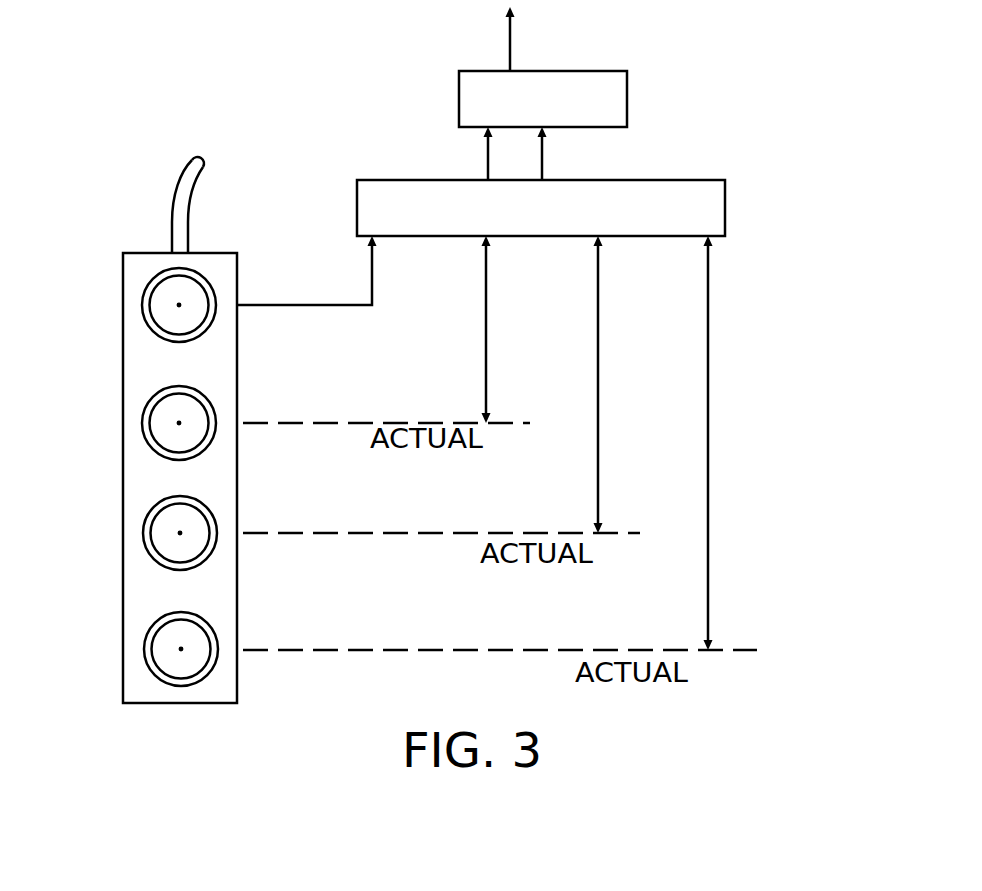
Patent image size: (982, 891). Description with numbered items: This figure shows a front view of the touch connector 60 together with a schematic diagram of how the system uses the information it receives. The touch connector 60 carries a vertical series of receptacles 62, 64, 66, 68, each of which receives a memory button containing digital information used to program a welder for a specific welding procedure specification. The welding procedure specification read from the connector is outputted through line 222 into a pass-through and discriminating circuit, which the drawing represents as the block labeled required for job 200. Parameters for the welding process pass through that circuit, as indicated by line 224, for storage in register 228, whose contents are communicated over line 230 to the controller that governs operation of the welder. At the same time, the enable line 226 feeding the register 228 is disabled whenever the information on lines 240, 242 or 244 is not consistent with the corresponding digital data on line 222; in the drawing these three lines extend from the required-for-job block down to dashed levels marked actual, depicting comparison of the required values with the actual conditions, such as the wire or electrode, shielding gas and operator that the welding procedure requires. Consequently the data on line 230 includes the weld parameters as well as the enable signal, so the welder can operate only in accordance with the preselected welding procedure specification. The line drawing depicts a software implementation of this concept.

The touch connector 60 is at (120, 278).
The receptacle 62 is at (147, 322).
The receptacle 64 is at (147, 435).
The receptacle 66 is at (147, 543).
The receptacle 68 is at (146, 652).
The required-for-job value block 200 is at (725, 210).
The line 222 is at (322, 308).
The line 224 is at (488, 158).
The enable line 226 is at (544, 158).
The register 228 is at (627, 93).
The line 230 is at (512, 36).
The line 240 is at (487, 329).
The line 242 is at (599, 360).
The line 244 is at (709, 452).